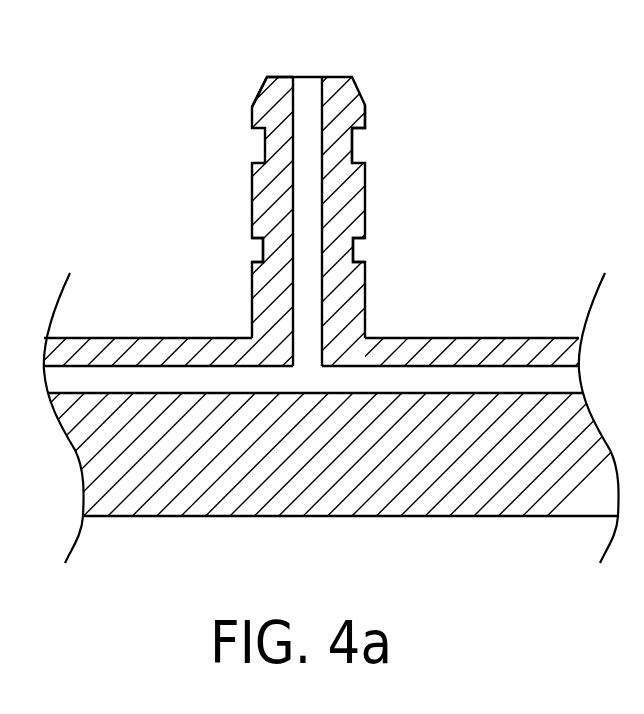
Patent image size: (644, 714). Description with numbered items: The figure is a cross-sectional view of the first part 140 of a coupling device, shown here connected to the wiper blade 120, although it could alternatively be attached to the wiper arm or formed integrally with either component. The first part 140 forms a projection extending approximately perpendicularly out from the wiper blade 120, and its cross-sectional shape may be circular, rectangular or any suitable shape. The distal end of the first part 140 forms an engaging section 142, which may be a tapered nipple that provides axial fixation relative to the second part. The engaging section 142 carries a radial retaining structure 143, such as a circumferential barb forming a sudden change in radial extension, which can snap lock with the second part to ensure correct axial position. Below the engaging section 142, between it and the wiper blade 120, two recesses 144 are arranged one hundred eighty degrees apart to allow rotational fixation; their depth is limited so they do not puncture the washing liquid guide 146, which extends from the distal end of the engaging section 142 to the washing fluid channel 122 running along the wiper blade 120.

The wiper blade 120 is at (272, 493).
The washing fluid channel 122 is at (420, 378).
The first part 140 is at (355, 73).
The engaging section 142 is at (369, 131).
The radial retaining structure 143 is at (257, 125).
The recesses 144 is at (263, 248).
The washing liquid guide 146 is at (310, 202).